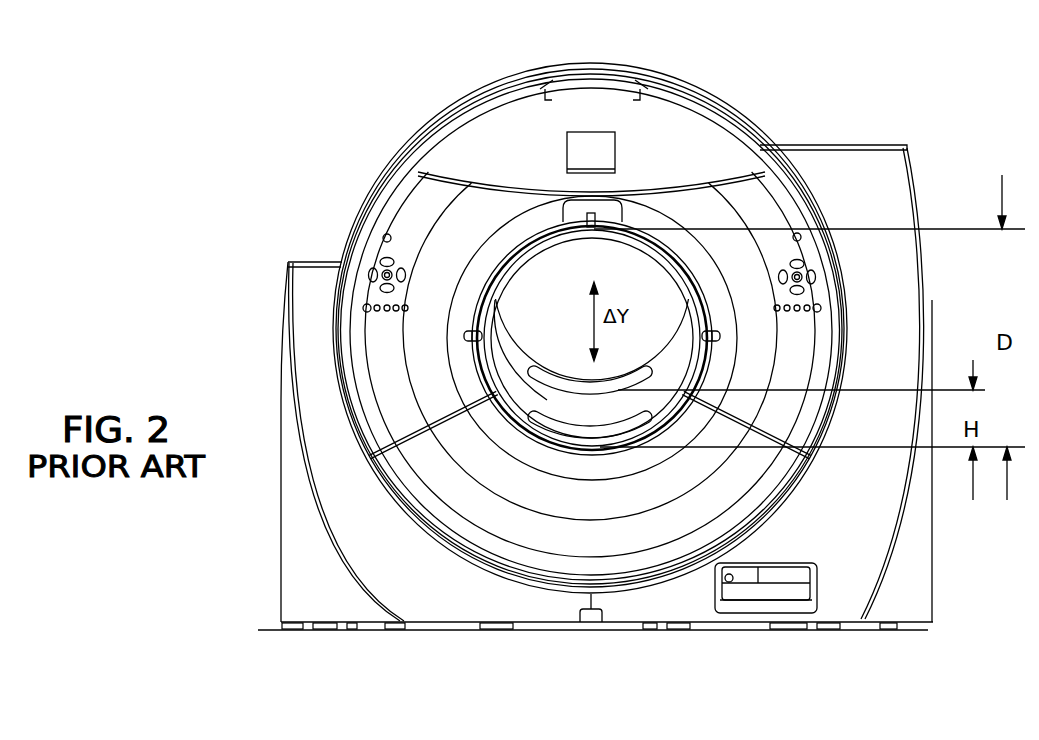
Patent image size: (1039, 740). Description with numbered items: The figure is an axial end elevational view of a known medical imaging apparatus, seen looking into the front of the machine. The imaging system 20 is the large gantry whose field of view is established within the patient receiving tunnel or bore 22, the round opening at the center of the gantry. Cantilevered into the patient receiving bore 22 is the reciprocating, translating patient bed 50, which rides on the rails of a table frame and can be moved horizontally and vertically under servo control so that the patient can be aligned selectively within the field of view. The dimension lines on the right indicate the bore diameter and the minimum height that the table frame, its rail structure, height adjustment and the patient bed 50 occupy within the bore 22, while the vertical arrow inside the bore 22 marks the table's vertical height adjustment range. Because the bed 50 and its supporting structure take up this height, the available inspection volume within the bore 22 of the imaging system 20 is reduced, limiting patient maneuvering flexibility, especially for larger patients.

The imaging system 20 is at (595, 351).
The patient receiving bore 22 is at (592, 232).
The patient bed 50 is at (562, 392).